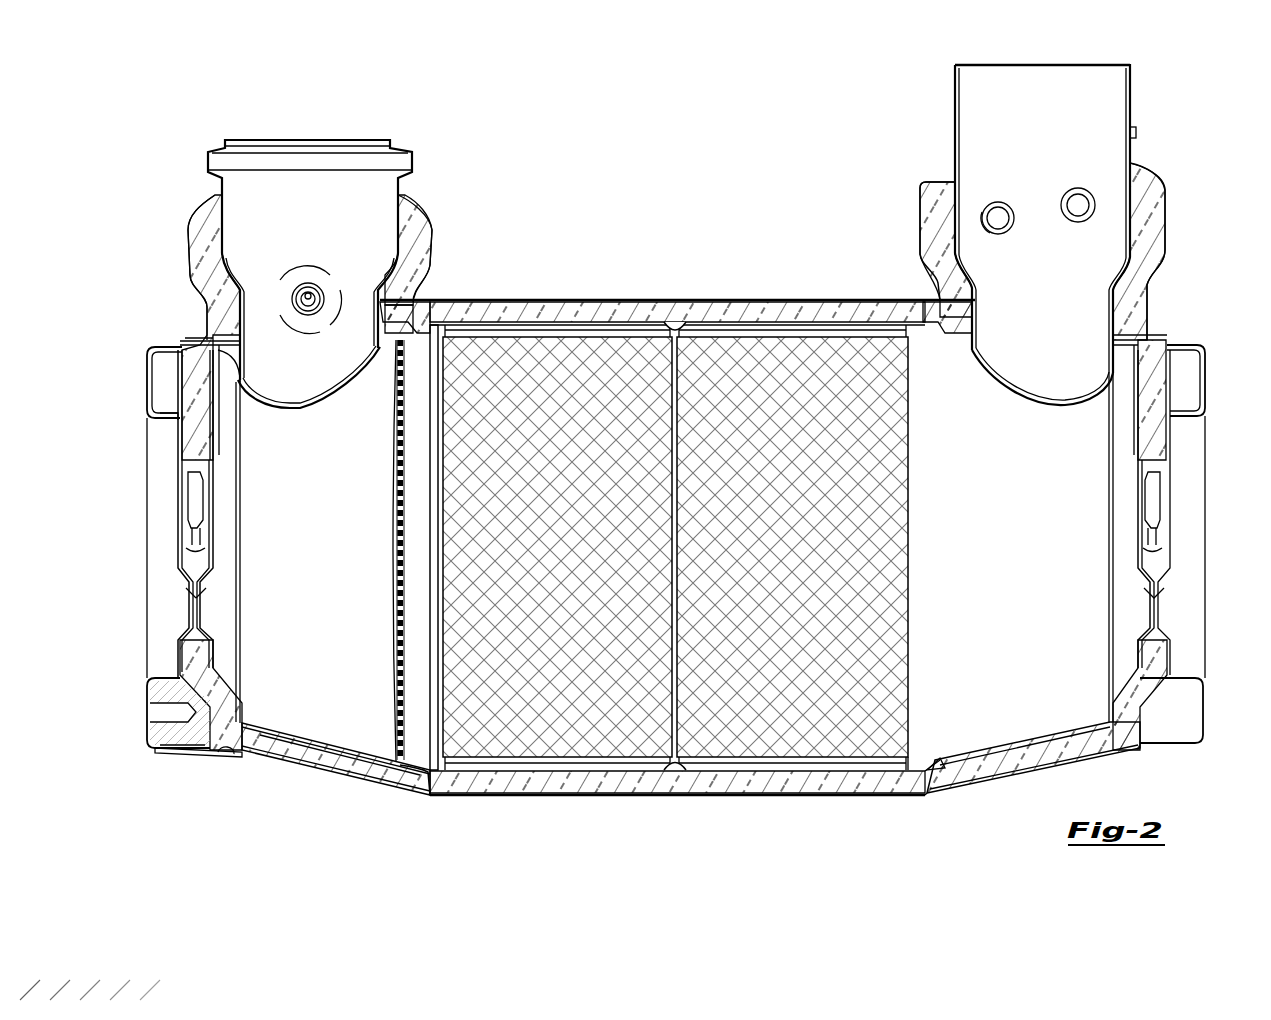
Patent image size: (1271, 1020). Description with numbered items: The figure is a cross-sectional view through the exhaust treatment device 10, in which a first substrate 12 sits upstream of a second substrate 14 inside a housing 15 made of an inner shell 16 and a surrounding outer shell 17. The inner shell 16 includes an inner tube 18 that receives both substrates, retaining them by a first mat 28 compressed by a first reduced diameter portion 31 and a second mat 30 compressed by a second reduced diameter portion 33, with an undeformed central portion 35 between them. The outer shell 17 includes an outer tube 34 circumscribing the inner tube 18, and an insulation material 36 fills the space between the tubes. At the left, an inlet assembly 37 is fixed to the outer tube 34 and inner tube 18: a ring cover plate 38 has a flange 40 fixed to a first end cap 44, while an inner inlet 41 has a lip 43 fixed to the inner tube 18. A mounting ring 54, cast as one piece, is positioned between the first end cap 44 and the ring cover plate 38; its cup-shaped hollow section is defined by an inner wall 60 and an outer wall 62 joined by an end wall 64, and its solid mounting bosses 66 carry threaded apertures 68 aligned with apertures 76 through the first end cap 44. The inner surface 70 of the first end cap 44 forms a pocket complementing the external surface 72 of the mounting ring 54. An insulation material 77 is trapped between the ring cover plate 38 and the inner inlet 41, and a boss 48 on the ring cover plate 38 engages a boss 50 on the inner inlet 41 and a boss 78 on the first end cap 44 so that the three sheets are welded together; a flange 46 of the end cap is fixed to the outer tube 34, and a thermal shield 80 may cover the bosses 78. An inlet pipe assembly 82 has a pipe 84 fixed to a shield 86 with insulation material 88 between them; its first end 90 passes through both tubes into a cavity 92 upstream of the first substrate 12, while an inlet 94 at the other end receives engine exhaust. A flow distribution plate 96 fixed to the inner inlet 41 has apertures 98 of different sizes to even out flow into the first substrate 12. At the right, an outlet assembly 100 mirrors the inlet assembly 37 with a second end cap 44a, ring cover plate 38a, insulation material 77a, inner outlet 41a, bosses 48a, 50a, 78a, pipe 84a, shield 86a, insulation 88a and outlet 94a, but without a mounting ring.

The exhaust treatment device 10 is at (622, 155).
The first substrate 12 is at (490, 350).
The second substrate 14 is at (725, 360).
The housing 15 is at (875, 275).
The inner shell 16 is at (945, 755).
The outer shell 17 is at (925, 797).
The inner tube 18 is at (830, 770).
The first mat 28 is at (562, 328).
The second mat 30 is at (762, 330).
The first reduced diameter portion 31 is at (520, 305).
The second reduced diameter portion 33 is at (832, 320).
The outer tube 34 is at (720, 795).
The undeformed central portion 35 is at (675, 325).
The insulation material 36 is at (628, 310).
The inlet assembly 37 is at (160, 312).
The ring cover plate 38 is at (215, 720).
The ring cover plate 38a is at (1175, 385).
The flange 40 is at (226, 755).
The inner inlet 41 is at (330, 740).
The inner outlet 41a is at (1062, 735).
The lip 43 is at (432, 330).
The first end cap 44 is at (165, 750).
The second end cap 44a is at (1190, 345).
The flange 46 is at (440, 785).
The boss 48 is at (190, 545).
The boss 48a is at (1165, 463).
The boss 50 is at (200, 490).
The boss 50a is at (1148, 485).
The mounting ring 54 is at (188, 742).
The inner wall 60 is at (170, 412).
The outer wall 62 is at (215, 332).
The end wall 64 is at (152, 378).
The mounting boss 66 is at (185, 690).
The threaded aperture 68 is at (165, 718).
The inner surface 70 is at (190, 345).
The external surface 72 is at (148, 403).
The aperture 76 is at (165, 695).
The insulation material 77 is at (298, 755).
The insulation material 77a is at (1155, 365).
The boss 78 is at (185, 592).
The boss 78a is at (1168, 590).
The thermal shield 80 is at (178, 457).
The inlet pipe assembly 82 is at (190, 190).
The pipe 84 is at (400, 180).
The pipe 84a is at (952, 135).
The shield 86 is at (415, 230).
The shield 86a is at (1160, 205).
The insulation material 88 is at (215, 225).
The insulation 88a is at (1145, 270).
The first end 90 is at (278, 400).
The cavity 92 is at (325, 528).
The inlet 94 is at (370, 138).
The outlet 94a is at (1125, 75).
The flow distribution plate 96 is at (395, 365).
The apertures 98 is at (400, 468).
The outlet assembly 100 is at (935, 112).